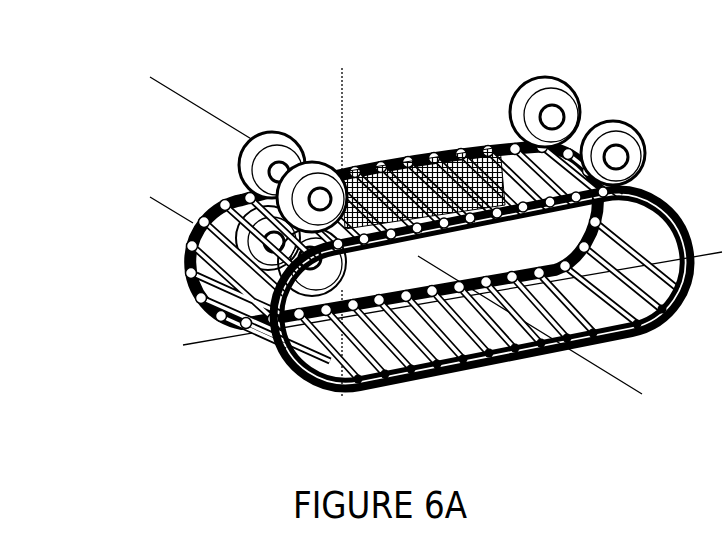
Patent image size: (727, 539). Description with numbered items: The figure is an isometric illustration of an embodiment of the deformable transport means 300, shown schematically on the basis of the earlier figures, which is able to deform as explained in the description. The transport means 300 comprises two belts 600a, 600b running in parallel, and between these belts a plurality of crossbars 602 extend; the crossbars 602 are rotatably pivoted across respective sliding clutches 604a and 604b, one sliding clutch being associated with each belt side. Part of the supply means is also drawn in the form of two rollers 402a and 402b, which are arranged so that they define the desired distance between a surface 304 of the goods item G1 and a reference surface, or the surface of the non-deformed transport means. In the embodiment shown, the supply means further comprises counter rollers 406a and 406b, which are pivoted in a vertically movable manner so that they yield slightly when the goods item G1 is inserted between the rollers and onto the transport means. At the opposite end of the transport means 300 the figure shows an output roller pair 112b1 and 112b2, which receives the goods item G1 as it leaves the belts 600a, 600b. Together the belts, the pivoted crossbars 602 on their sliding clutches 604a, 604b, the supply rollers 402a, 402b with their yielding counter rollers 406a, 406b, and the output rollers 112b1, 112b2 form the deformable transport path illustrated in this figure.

The transport means 300 is at (76, 389).
The surface 304 is at (397, 187).
The goods item G1 is at (445, 182).
The roller 402a is at (307, 162).
The roller 402b is at (253, 134).
The counter roller 406a is at (285, 263).
The counter roller 406b is at (247, 223).
The output roller 112b1 is at (628, 126).
The output roller 112b2 is at (563, 82).
The belt 600a is at (676, 312).
The belt 600b is at (220, 198).
The crossbar 602 is at (460, 352).
The sliding clutch 604a is at (550, 340).
The sliding clutch 604b is at (406, 301).